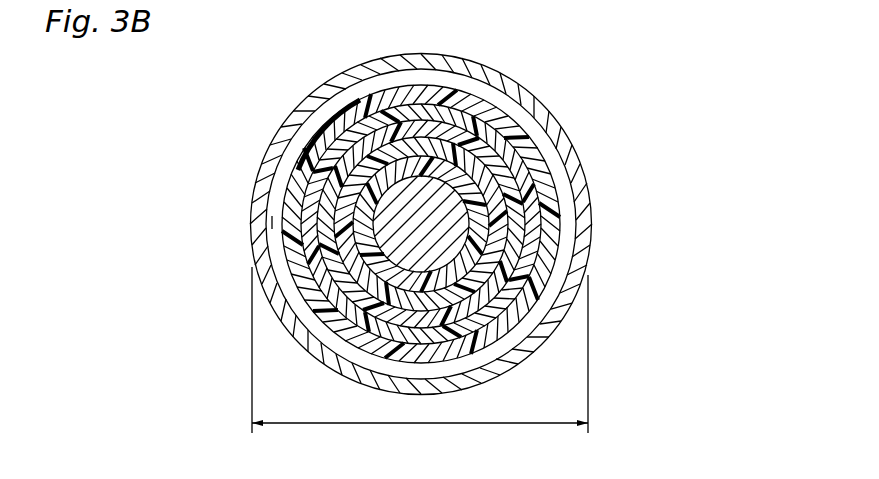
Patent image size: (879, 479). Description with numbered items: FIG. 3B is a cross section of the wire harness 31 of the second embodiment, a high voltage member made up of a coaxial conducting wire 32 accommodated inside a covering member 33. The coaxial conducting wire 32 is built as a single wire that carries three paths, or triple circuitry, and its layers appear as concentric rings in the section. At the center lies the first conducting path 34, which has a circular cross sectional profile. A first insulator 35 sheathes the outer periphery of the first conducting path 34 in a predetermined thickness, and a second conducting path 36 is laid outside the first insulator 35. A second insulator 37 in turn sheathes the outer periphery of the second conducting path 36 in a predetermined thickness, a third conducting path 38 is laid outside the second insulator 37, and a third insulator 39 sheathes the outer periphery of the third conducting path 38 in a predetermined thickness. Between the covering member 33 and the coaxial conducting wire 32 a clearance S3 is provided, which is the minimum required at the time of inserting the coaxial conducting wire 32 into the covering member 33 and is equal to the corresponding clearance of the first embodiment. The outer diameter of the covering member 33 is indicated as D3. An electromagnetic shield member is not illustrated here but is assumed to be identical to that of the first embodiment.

The wire harness 31 is at (292, 96).
The coaxial conducting wire 32 is at (293, 166).
The covering member 33 is at (500, 82).
The first conducting path 34 is at (497, 167).
The first insulator 35 is at (530, 188).
The second conducting path 36 is at (548, 189).
The second insulator 37 is at (557, 238).
The third conducting path 38 is at (327, 276).
The third insulator 39 is at (327, 310).
The clearance S3 is at (273, 222).
The outer diameter of the covering member D3 is at (420, 359).